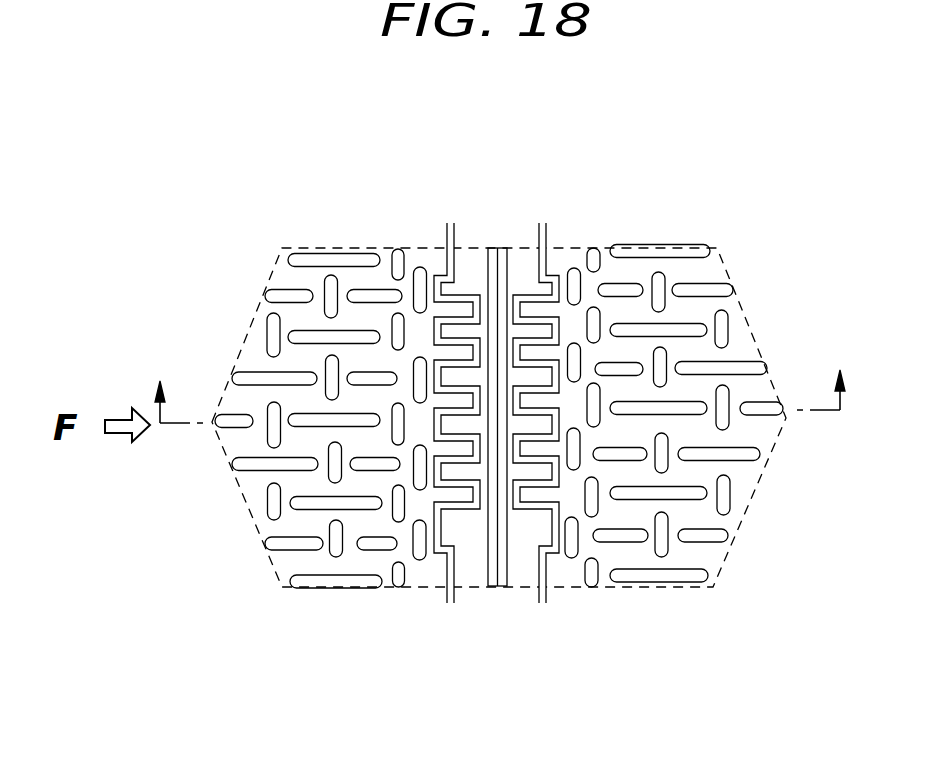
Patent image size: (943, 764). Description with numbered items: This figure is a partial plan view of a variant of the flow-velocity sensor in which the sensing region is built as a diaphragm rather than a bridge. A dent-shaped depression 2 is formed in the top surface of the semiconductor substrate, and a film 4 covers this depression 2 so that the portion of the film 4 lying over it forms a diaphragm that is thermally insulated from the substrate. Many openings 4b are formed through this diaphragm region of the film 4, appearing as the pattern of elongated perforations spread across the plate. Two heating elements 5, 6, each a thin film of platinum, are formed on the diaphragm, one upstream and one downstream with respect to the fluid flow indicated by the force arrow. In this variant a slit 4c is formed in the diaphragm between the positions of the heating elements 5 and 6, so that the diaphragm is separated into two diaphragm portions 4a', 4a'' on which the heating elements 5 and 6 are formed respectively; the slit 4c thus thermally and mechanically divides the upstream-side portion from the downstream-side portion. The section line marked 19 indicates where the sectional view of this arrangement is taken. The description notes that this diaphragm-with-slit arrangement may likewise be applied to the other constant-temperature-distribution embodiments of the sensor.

The depression 2 is at (288, 561).
The film 4 is at (523, 424).
The diaphragm portion 4a' is at (451, 461).
The diaphragm portion 4a'' is at (571, 466).
The openings 4b is at (738, 453).
The slit 4c is at (507, 588).
The heating element 5 is at (445, 598).
The heating element 6 is at (548, 595).
The section line 19- 19 is at (508, 376).